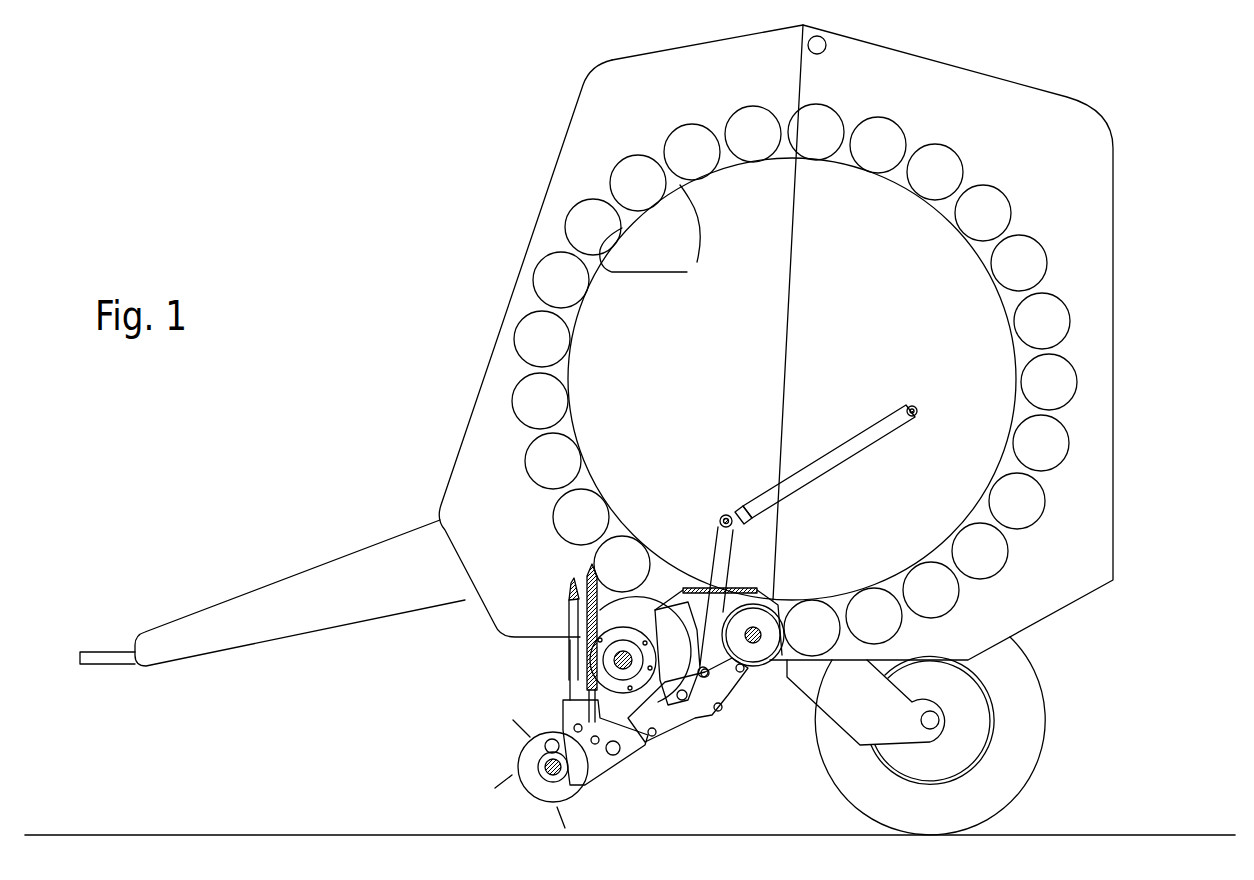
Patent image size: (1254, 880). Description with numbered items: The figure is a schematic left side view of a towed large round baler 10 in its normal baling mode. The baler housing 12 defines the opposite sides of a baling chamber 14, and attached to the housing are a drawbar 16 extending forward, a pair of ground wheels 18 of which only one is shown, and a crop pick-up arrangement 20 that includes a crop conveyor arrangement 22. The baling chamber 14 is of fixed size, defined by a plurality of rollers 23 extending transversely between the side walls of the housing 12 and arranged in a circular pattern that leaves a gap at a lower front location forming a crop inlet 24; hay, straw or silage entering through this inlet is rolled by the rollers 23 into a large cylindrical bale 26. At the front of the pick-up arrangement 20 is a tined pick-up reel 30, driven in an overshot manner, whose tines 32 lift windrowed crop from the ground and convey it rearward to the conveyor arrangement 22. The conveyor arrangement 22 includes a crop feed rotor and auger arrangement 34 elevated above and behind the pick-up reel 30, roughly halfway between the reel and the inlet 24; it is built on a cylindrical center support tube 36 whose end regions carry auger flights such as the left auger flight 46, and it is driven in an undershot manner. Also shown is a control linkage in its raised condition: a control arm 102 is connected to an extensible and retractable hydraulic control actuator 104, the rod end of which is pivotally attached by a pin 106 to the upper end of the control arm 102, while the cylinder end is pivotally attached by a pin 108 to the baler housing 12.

The baler 10 is at (412, 279).
The baler housing 12 is at (540, 213).
The baling chamber 14 is at (737, 384).
The drawbar 16 is at (272, 585).
The ground wheels 18 is at (819, 778).
The crop pick-up arrangement 20 is at (377, 700).
The crop conveyor arrangement 22 is at (690, 737).
The rollers 23 is at (656, 236).
The crop inlet 24 is at (661, 587).
The bale 26 is at (597, 457).
The tined pick-up reel 30 is at (480, 747).
The tines 32 is at (515, 775).
The crop feed rotor and auger arrangement 34 is at (558, 700).
The center support tube 36 is at (584, 690).
The left auger flight 46 is at (599, 572).
The control arm 102 is at (757, 667).
The hydraulic control actuator 104 is at (860, 433).
The pin 106 is at (723, 514).
The pin 108 is at (912, 406).